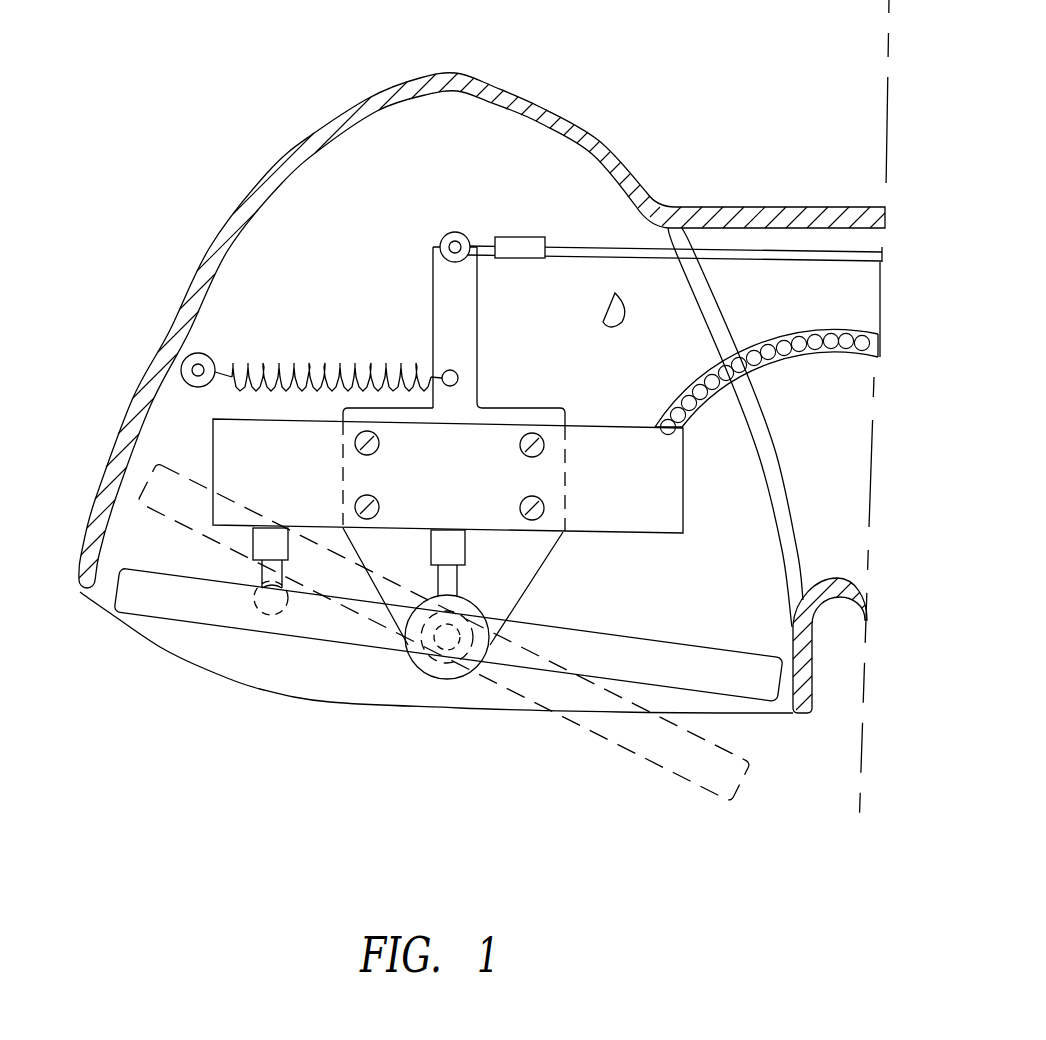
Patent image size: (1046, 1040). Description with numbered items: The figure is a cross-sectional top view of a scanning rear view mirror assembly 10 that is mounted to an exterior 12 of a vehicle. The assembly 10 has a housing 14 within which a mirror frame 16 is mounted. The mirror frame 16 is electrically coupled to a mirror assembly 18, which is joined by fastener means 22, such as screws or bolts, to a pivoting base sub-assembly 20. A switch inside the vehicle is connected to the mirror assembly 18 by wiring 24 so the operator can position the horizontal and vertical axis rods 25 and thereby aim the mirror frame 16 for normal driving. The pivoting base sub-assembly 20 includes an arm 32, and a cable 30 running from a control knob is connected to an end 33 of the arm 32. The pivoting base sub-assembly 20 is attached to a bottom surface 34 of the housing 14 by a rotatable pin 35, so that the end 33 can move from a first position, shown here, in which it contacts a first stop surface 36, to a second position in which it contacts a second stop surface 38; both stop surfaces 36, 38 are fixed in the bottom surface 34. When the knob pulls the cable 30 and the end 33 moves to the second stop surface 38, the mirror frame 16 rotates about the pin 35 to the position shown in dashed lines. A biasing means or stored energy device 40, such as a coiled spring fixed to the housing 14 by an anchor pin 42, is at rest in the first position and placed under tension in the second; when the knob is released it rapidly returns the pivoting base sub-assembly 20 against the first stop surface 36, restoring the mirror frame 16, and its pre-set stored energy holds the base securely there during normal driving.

The rear view mirror assembly 10 is at (205, 106).
The exterior of a vehicle 12 is at (887, 103).
The housing 14 is at (524, 102).
The mirror frame 16 is at (180, 490).
The mirror assembly 18 is at (660, 473).
The pivoting base sub-assembly 20 is at (527, 415).
The fastener means 22 is at (538, 528).
The wiring 24 is at (796, 327).
The horizontal and vertical axis rods 25 is at (253, 543).
The cable 30 is at (583, 247).
The arm 32 is at (478, 320).
The end of the arm 33 is at (440, 247).
The bottom surface of housing 34 is at (398, 130).
The rotatable pin 35 is at (446, 640).
The first stop surface 36 is at (417, 294).
The second stop surface 38 is at (621, 302).
The biasing means or stored energy device 40 is at (280, 362).
The anchor pin 42 is at (199, 363).